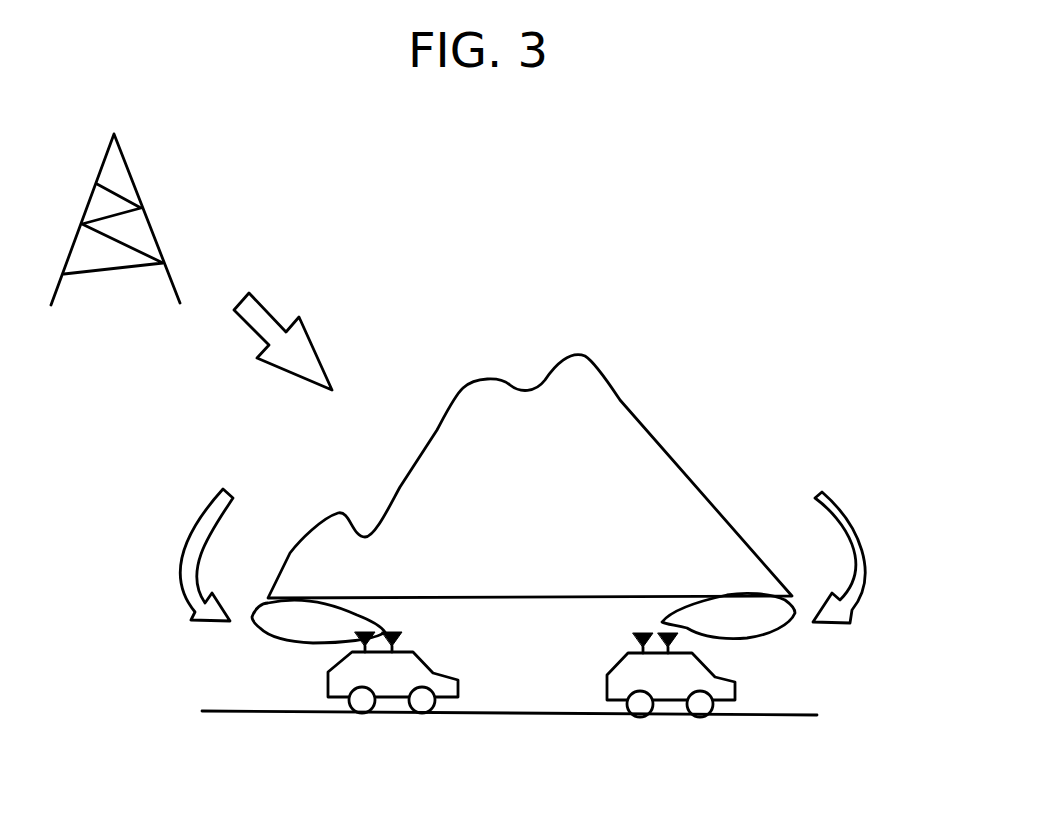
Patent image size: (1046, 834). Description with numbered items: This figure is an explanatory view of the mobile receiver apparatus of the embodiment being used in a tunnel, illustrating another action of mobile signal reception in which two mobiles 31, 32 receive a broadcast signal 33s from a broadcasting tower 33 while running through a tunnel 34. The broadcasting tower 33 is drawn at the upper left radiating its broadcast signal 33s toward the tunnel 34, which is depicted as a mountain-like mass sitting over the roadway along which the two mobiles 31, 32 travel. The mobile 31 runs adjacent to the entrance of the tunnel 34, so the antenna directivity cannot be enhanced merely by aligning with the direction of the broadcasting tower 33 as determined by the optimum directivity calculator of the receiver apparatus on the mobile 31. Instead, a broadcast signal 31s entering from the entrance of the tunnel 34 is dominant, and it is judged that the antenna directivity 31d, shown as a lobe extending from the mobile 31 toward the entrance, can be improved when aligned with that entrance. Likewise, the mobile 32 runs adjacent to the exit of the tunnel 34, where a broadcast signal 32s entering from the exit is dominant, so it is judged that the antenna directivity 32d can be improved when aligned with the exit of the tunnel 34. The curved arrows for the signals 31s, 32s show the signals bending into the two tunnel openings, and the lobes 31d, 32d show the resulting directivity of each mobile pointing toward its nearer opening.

The broadcasting tower 33 is at (119, 175).
The broadcast signal 33s is at (302, 350).
The mobile 31 is at (337, 687).
The mobile 32 is at (722, 693).
The broadcast signal 31s is at (210, 517).
The broadcast signal 32s is at (847, 530).
The antenna directivity 31d is at (277, 625).
The antenna directivity 32d is at (768, 620).
The tunnel 34 is at (522, 697).